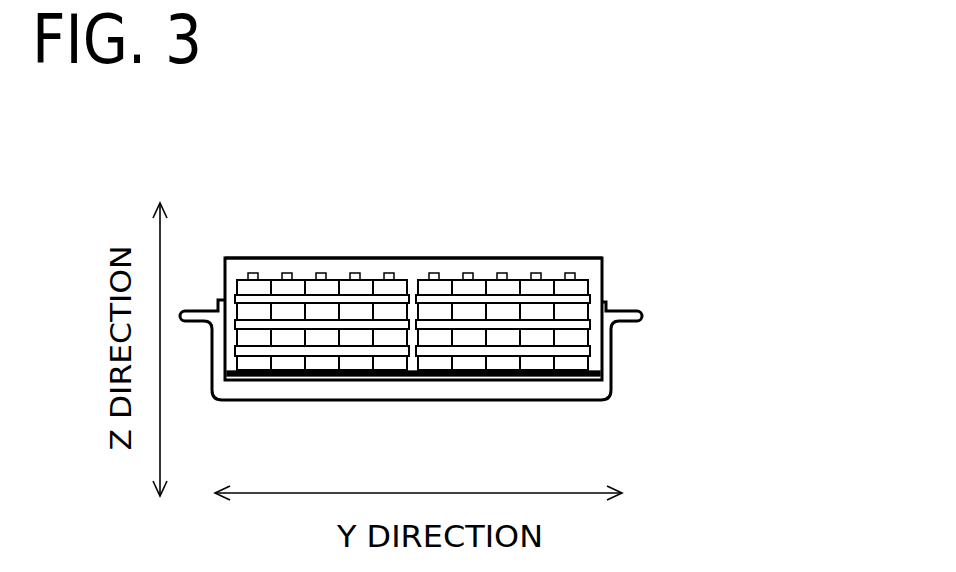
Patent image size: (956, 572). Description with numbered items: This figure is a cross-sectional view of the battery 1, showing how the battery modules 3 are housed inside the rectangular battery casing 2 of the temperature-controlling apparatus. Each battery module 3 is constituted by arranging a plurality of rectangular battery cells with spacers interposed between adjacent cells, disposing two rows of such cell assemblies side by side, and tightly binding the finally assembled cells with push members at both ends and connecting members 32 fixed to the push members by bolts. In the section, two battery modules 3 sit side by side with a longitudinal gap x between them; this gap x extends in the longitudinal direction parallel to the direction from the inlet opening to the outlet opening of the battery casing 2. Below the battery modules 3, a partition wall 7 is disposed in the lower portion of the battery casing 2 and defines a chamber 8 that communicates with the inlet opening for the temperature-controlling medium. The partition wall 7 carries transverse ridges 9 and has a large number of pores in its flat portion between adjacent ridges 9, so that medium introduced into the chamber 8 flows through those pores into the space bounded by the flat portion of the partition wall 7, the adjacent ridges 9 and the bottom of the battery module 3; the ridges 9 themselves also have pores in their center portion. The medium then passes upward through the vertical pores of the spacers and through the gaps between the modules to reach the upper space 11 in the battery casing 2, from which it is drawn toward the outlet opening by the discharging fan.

The battery module case 1 is at (280, 242).
The upper space 11 is at (332, 258).
The battery casing 2 is at (380, 258).
The battery module 3 is at (587, 248).
The connecting member 32 is at (568, 303).
The partition wall 7 is at (545, 378).
The chamber 8 is at (473, 392).
The transverse ridge 9 is at (592, 369).
The longitudinal gap x is at (412, 362).